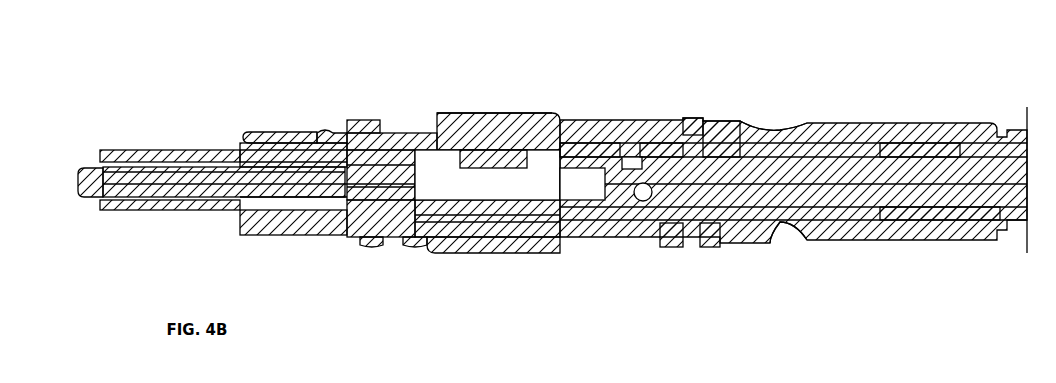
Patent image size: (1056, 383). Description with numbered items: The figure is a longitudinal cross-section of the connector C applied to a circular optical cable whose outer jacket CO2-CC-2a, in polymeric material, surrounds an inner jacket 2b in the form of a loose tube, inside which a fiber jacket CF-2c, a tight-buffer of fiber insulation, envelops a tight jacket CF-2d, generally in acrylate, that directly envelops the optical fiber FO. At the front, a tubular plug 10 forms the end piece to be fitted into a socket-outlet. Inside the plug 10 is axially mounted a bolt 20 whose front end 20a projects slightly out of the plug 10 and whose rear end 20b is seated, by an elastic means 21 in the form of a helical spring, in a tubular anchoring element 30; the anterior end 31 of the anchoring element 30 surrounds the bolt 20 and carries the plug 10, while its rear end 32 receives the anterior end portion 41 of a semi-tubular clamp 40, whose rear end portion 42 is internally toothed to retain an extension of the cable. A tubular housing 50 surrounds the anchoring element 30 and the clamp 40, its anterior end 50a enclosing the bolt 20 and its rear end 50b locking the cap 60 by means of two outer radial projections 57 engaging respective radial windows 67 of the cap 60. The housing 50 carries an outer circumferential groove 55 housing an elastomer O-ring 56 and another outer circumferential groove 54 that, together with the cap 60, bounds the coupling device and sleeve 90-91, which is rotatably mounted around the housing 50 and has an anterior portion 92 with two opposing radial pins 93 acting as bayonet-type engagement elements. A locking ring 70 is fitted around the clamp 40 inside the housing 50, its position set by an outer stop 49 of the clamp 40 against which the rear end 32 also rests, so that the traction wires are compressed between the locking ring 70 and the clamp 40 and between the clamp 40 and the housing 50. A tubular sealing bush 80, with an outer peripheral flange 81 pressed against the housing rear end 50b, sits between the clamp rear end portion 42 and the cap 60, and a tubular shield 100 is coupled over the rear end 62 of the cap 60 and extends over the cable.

The tubular plug 10 is at (183, 217).
The bolt 20 is at (197, 163).
The front end of the bolt 20a is at (83, 197).
The rear end of the bolt 20b is at (352, 178).
The elastic means 21 is at (350, 207).
The tubular anchoring element 30 is at (423, 153).
The anterior end of the anchoring element 31 is at (243, 153).
The rear end of the anchoring element 32 is at (528, 147).
The semi-tubular clamp 40 is at (540, 212).
The anterior end portion of the clamp 41 is at (465, 207).
The rear end portion of the clamp 42 is at (630, 162).
The outer stop 49 is at (595, 148).
The tubular housing 50 is at (467, 130).
The anterior end of the tubular housing 50a is at (252, 130).
The rear end of the tubular housing 50b is at (707, 150).
The outer circumferential groove 54 is at (350, 127).
The outer circumferential groove 55 is at (325, 130).
The elastomer O-ring 56 is at (323, 240).
The outer radial projections 57 is at (653, 148).
The cap 60 is at (780, 143).
The rear end of the cap 62 is at (907, 147).
The radial windows 67 is at (692, 237).
The locking ring 70 is at (690, 130).
The tubular sealing bush 80 is at (783, 240).
The outer peripheral flange 81 is at (720, 230).
The coupling device in the form of a sleeve 90-91 is at (503, 113).
The anterior portion of the sleeve 92 is at (390, 240).
The radial pins 93 is at (373, 247).
The tubular shield 100 is at (953, 123).
The optical fiber FO is at (233, 187).
The inner fiber jacket defining a tight jacket CF-2d is at (455, 180).
The fiber jacket in the form of a tight-buffer of fiber insulation CF-2c is at (573, 187).
The inner jacket 2b is at (623, 183).
The outer jacket of the cable jacket CO2-CC-2a is at (963, 210).
The connector C is at (583, 65).